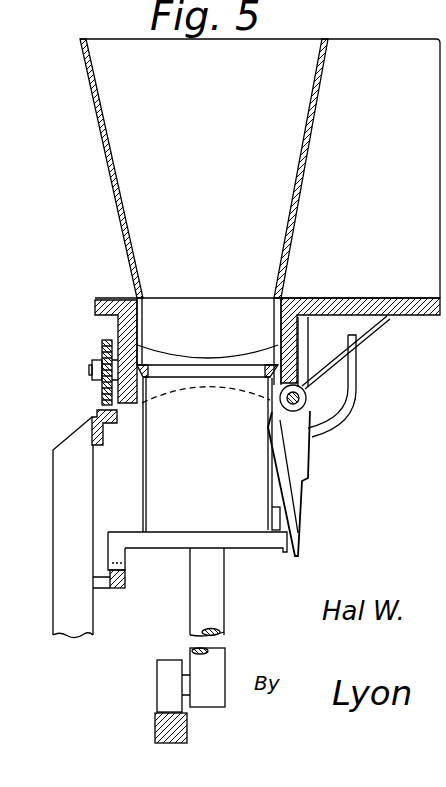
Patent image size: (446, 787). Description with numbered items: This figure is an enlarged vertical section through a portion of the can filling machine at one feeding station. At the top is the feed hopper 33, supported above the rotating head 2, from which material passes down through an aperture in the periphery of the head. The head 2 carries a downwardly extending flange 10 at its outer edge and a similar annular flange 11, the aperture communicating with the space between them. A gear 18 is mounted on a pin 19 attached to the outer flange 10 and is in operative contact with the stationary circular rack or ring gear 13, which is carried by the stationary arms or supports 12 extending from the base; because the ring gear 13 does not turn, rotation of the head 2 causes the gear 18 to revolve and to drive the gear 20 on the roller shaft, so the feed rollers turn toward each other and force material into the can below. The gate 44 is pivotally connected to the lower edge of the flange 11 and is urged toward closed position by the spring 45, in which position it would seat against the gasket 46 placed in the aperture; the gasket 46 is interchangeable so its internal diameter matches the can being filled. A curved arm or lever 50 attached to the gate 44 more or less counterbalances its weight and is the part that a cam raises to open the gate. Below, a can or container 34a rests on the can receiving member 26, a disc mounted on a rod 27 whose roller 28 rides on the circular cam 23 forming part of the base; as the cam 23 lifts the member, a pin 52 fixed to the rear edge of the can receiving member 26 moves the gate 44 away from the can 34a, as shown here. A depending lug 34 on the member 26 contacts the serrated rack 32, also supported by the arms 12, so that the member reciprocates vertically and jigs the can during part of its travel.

The rotating head 2 is at (104, 290).
The downwardly extending flange 10 is at (127, 325).
The annular flange 11 is at (296, 362).
The stationary arms or supports 12 is at (57, 473).
The circular rack or ring gear 13 is at (105, 411).
The gear 18 is at (102, 394).
The pin 19 is at (92, 370).
The gear 20 is at (237, 358).
The circular cam 23 is at (147, 726).
The can receiving member 26 is at (262, 542).
The rod 27 is at (213, 620).
The roller 28 is at (166, 682).
The serrated rack 32 is at (117, 590).
The feed hopper 33 is at (108, 158).
The depending lug 34 is at (115, 557).
The can or container 34a is at (160, 488).
The gate 44 is at (295, 488).
The spring 45 is at (385, 325).
The gasket 46 is at (158, 372).
The lever or curved arm 50 is at (357, 407).
The pin 52 is at (280, 525).